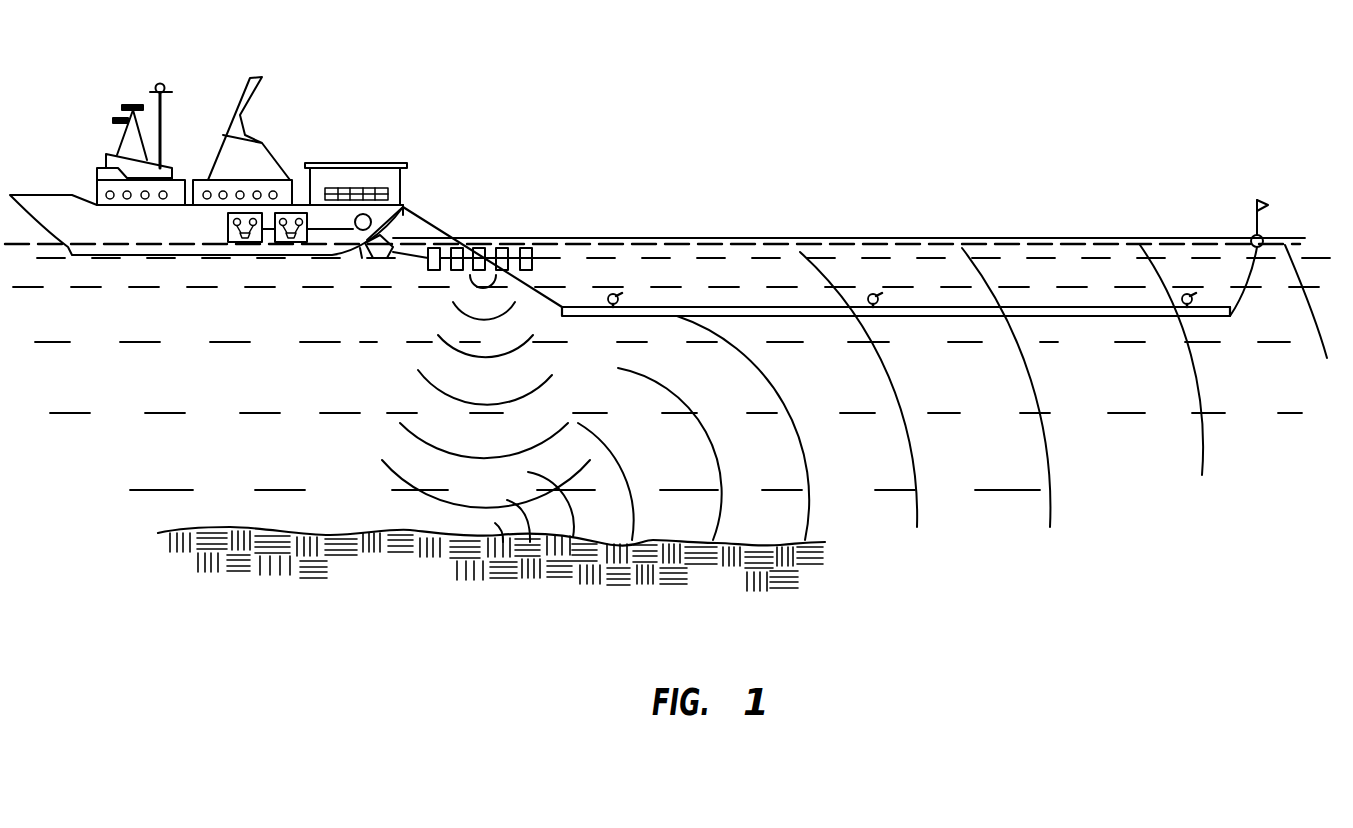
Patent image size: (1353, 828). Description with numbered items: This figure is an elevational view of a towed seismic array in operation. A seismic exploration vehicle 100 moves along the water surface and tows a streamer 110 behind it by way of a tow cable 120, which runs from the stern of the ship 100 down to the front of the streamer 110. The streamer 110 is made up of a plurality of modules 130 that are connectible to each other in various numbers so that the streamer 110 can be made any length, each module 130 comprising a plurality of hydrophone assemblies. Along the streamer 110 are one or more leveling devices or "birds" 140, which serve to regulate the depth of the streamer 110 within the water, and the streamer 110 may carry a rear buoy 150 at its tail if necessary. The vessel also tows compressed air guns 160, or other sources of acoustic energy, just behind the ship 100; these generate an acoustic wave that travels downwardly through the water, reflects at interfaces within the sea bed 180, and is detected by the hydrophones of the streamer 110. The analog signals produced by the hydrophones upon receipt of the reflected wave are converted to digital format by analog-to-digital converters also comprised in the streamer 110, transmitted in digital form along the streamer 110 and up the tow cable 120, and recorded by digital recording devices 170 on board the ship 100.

The seismic exploration vehicle 100 is at (108, 240).
The streamer 110 is at (1058, 318).
The tow cable 120 is at (542, 300).
The module 130 is at (726, 306).
The leveling device 140 is at (616, 294).
The rear buoy 150 is at (1251, 238).
The compressed air guns 160 is at (503, 247).
The digital recording devices 170 is at (250, 213).
The sea bed 180 is at (378, 531).